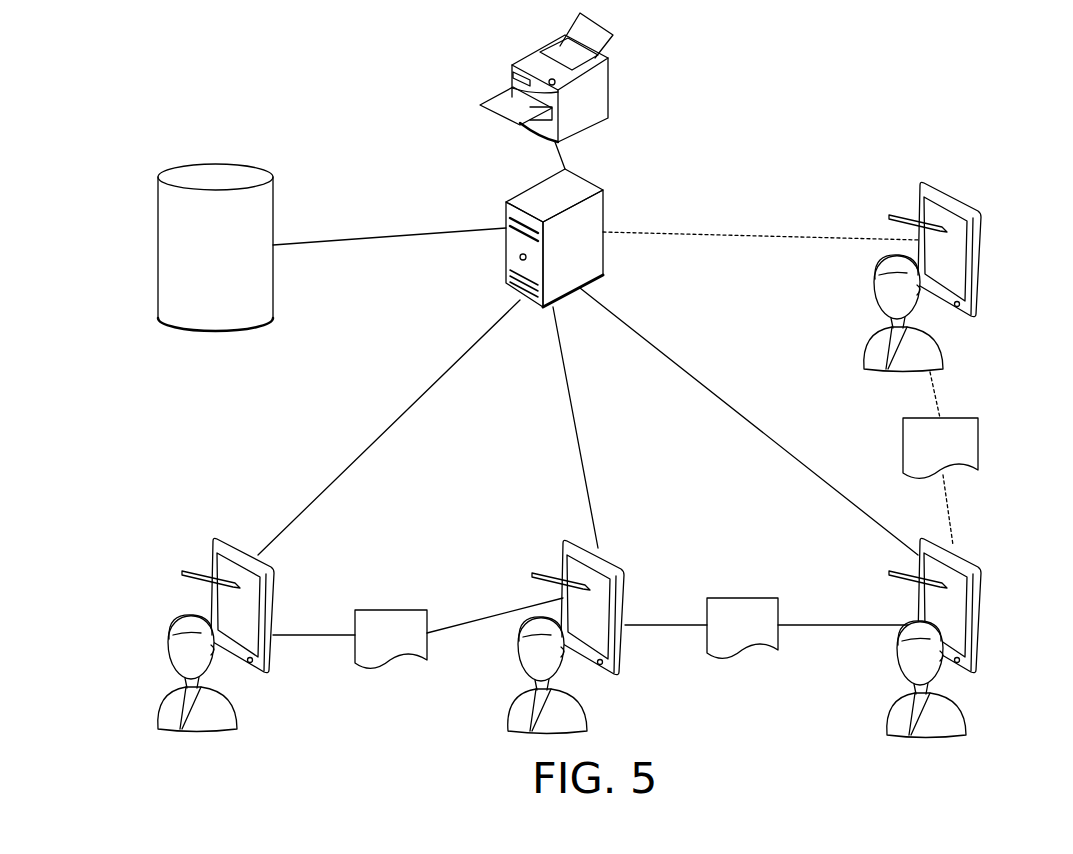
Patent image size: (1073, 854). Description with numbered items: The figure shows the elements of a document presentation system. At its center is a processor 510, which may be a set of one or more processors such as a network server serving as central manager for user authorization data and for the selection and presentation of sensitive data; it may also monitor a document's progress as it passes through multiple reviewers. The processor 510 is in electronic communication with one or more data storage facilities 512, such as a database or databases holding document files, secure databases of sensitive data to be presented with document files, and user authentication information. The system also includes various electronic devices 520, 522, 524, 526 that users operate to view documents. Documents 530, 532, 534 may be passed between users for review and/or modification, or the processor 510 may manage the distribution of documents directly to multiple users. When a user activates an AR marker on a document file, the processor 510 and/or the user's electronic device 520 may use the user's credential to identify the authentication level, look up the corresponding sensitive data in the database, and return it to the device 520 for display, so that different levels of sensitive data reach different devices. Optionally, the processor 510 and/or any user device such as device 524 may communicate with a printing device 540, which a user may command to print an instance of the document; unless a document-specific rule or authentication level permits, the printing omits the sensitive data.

The processor 510 is at (506, 255).
The data storage facility 512 is at (217, 330).
The electronic device 520 is at (273, 662).
The electronic device 522 is at (625, 662).
The electronic device 524 is at (982, 662).
The electronic device 526 is at (983, 303).
The document 530 is at (390, 610).
The document 532 is at (742, 598).
The document 534 is at (978, 445).
The printing device 540 is at (608, 88).